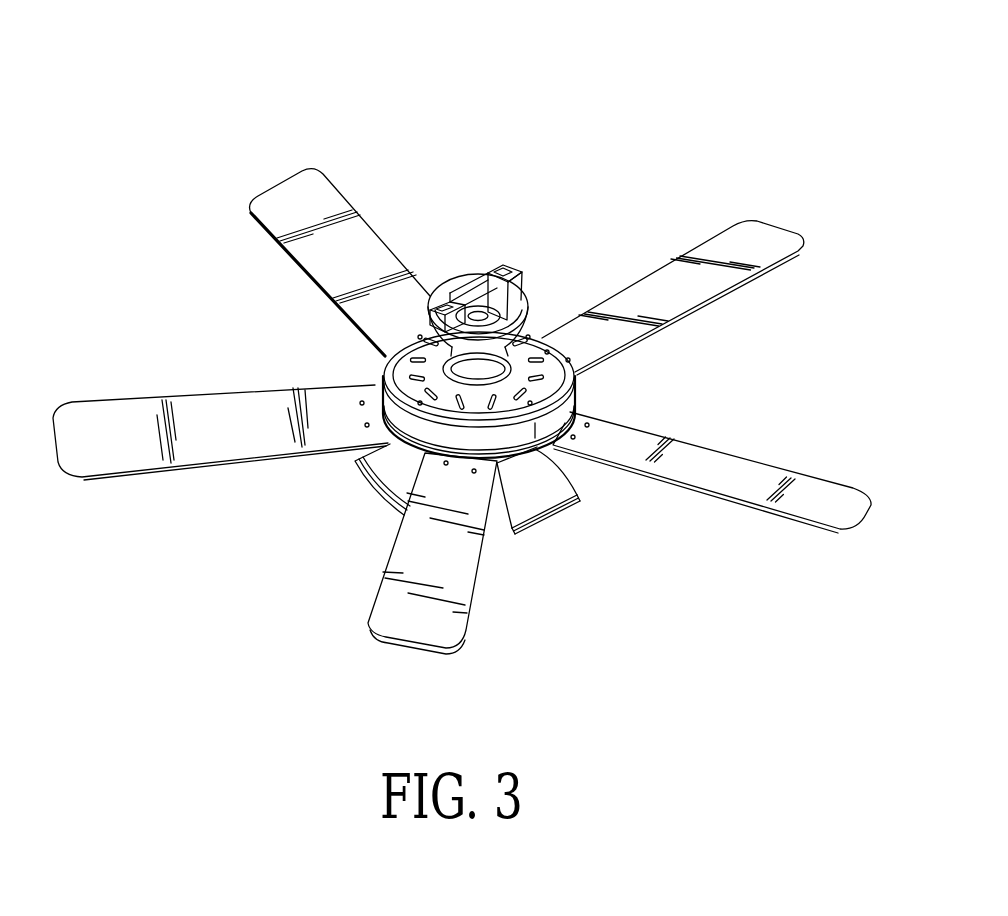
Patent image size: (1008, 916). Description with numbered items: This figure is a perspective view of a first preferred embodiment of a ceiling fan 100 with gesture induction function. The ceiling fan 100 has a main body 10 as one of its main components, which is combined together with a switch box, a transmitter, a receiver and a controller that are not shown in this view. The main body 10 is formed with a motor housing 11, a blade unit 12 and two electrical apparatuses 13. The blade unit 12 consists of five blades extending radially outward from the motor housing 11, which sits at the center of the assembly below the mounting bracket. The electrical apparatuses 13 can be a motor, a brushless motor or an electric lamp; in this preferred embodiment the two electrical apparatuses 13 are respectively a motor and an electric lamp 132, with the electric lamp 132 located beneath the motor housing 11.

The ceiling fan 100 is at (659, 160).
The main body 10 is at (545, 312).
The motor housing 11 is at (598, 389).
The blade unit 12 is at (333, 203).
The electrical apparatuses 13 is at (577, 498).
The electric lamp 132 is at (520, 527).